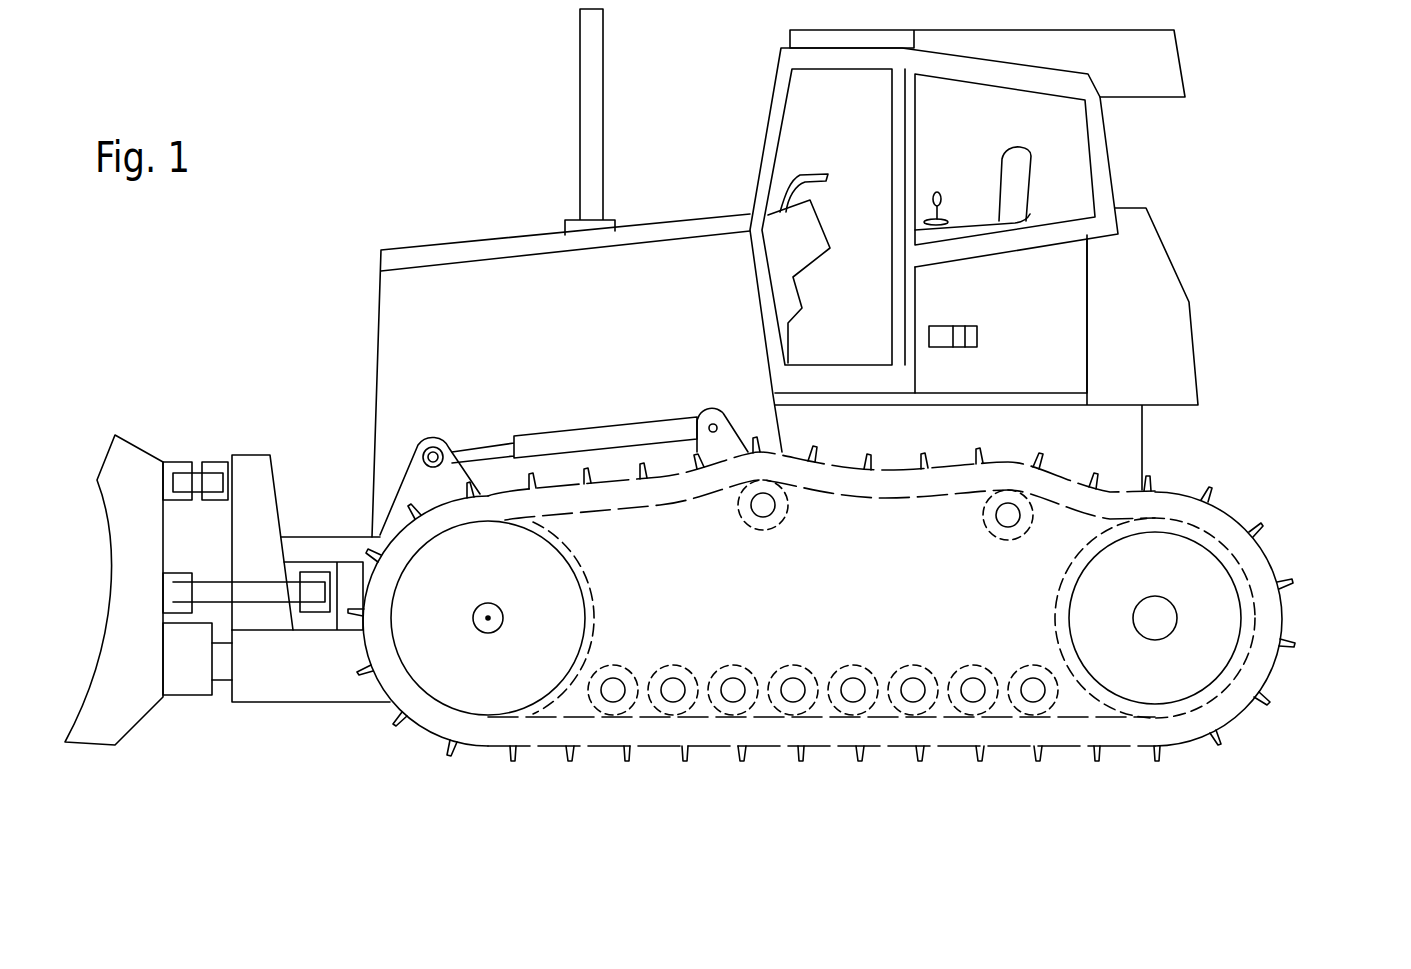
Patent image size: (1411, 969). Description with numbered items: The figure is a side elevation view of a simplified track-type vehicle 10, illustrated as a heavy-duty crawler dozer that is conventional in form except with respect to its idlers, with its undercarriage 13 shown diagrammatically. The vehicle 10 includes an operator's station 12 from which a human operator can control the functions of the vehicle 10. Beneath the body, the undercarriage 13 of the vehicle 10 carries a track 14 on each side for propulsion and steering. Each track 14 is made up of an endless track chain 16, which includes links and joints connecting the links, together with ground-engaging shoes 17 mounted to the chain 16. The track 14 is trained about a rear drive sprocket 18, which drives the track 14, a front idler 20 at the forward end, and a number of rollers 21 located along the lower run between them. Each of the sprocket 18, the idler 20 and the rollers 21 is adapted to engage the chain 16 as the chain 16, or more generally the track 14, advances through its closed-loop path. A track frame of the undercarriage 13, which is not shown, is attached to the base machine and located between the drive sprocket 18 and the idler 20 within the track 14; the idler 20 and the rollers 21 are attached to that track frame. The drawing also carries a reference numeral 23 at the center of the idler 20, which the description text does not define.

The track-type vehicle 10 is at (388, 118).
The operator's station 12 is at (772, 103).
The undercarriage 13 is at (1304, 444).
The track 14 is at (1214, 450).
The endless track chain 16 is at (975, 493).
The ground-engaging shoes 17 is at (948, 443).
The rear drive sprocket 18 is at (1090, 626).
The front idler 20 is at (553, 572).
The rollers 21 is at (749, 524).
The idler axle 23 is at (491, 620).